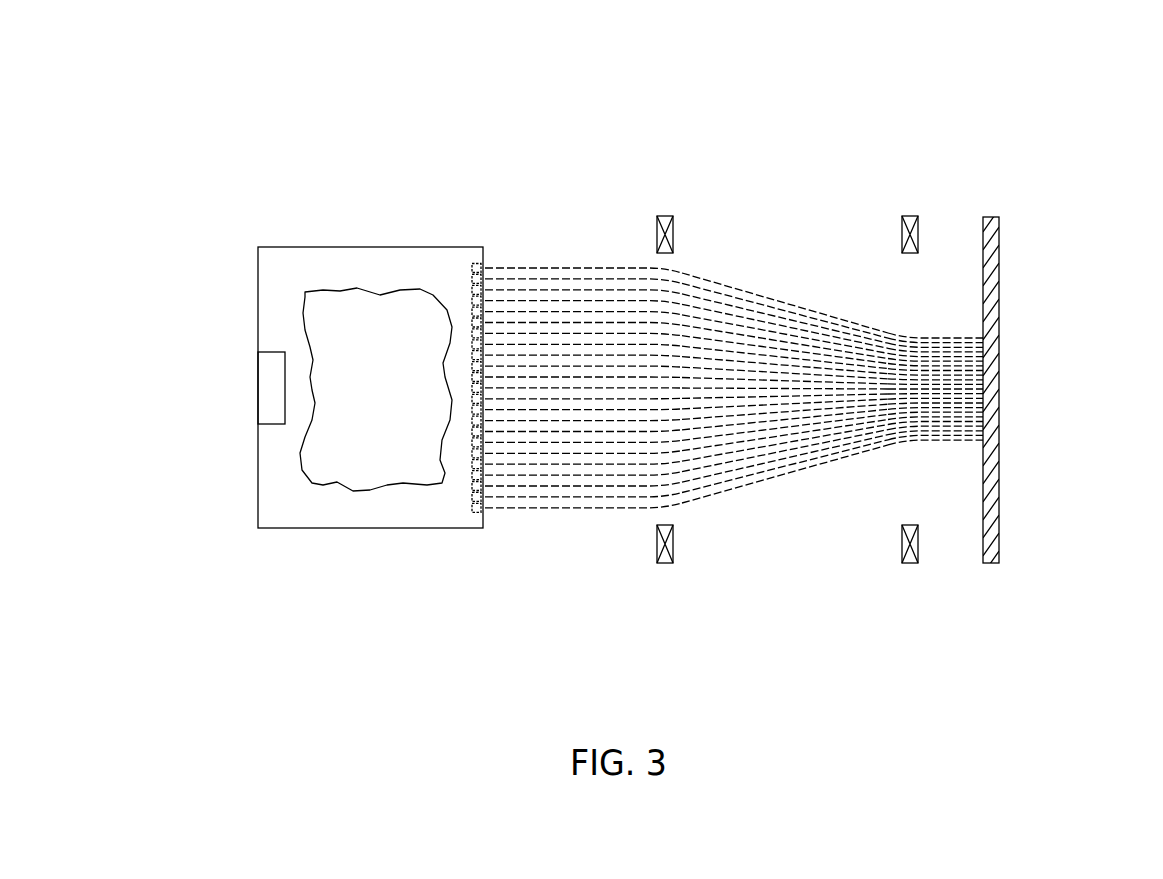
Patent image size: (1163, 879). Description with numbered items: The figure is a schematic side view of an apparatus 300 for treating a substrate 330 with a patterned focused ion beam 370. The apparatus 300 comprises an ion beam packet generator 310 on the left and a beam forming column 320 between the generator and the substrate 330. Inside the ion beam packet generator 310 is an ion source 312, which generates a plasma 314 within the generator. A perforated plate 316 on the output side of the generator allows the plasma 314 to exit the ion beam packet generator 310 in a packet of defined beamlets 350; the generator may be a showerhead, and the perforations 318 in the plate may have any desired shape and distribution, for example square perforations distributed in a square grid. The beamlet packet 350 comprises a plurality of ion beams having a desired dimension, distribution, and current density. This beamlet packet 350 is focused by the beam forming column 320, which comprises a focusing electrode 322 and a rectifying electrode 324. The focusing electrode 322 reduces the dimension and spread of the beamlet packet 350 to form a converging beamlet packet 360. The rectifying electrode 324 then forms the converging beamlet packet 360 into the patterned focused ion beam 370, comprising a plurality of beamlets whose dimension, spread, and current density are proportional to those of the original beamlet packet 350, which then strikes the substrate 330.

The apparatus 300 is at (995, 115).
The ion beam packet generator 310 is at (309, 247).
The ion source 312 is at (272, 388).
The plasma 314 is at (401, 391).
The perforated plate 316 is at (473, 266).
The perforations 318 is at (463, 482).
The beam forming column 320 is at (789, 394).
The focusing electrode 322 is at (662, 563).
The rectifying electrode 324 is at (903, 565).
The substrate 330 is at (1000, 245).
The beamlet packet 350 is at (545, 508).
The converging beamlet packet 360 is at (803, 468).
The patterned focused ion beam 370 is at (951, 338).